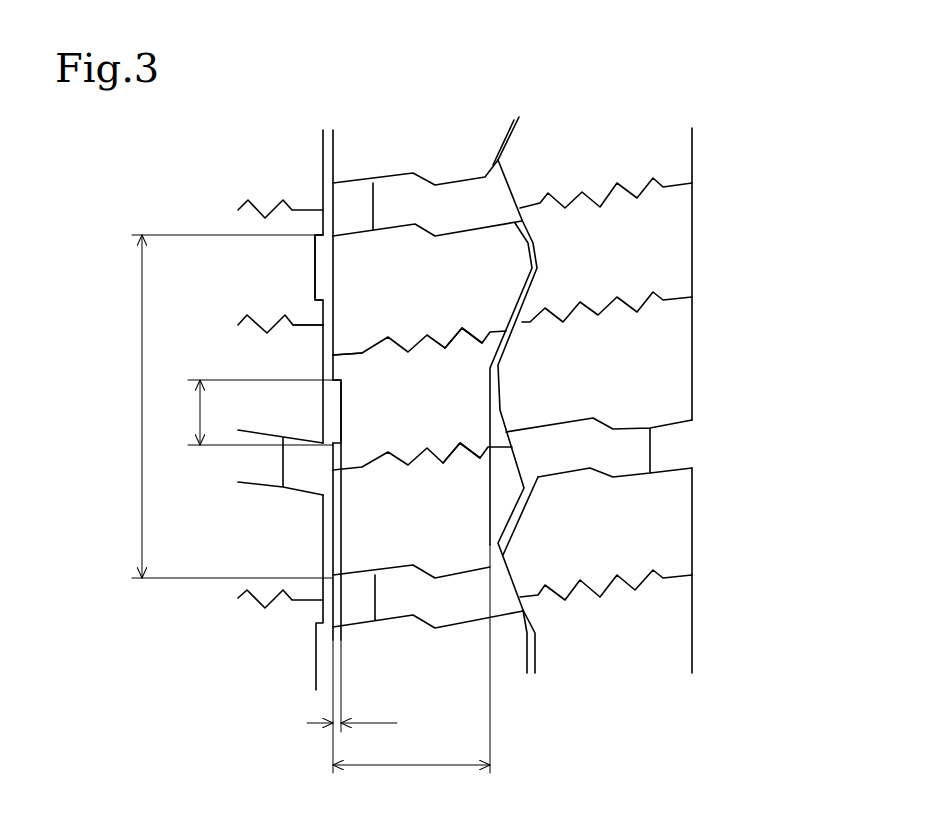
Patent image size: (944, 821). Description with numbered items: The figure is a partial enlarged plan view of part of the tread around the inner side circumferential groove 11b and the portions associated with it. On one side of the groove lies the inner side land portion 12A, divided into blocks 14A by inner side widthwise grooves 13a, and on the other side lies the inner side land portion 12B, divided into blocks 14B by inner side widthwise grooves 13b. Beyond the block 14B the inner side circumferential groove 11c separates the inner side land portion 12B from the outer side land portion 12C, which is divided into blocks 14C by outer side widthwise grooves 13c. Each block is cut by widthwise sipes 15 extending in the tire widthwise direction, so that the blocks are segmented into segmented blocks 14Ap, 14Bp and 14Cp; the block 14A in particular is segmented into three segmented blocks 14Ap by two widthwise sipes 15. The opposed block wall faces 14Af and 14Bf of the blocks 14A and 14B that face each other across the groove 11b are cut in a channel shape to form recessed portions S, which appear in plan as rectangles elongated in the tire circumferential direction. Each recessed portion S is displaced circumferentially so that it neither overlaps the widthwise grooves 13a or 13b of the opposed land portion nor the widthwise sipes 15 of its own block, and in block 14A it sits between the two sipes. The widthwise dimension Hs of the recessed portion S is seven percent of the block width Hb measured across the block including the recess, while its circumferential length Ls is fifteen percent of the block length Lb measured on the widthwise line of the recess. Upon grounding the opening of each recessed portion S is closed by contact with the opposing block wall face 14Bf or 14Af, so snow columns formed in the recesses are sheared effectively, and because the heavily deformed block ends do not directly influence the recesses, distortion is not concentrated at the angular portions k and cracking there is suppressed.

The inner side land portion 12A is at (215, 143).
The inner side land portion 12B is at (423, 143).
The outer side land portion 12C is at (593, 143).
The inner side circumferential groove 11b is at (325, 129).
The inner side circumferential groove 11c is at (513, 126).
The segmented block 14Ap is at (307, 228).
The block 14A is at (280, 353).
The block wall face 14Af is at (323, 362).
The segmented block 14Bp is at (433, 372).
The block 14B is at (422, 284).
The block wall face 14Bf is at (328, 340).
The segmented block 14Cp is at (660, 237).
The block 14C is at (608, 349).
The inner side widthwise groove 13a is at (265, 466).
The inner side widthwise groove 13b is at (459, 209).
The outer side widthwise groove 13c is at (632, 448).
The widthwise sipe 15 is at (470, 332).
The angular portion k is at (314, 239).
The recessed portion S is at (326, 263).
The block length Lb is at (219, 406).
The circumferential length Ls is at (249, 412).
The widthwise dimension Hs is at (352, 706).
The block width Hb is at (411, 659).